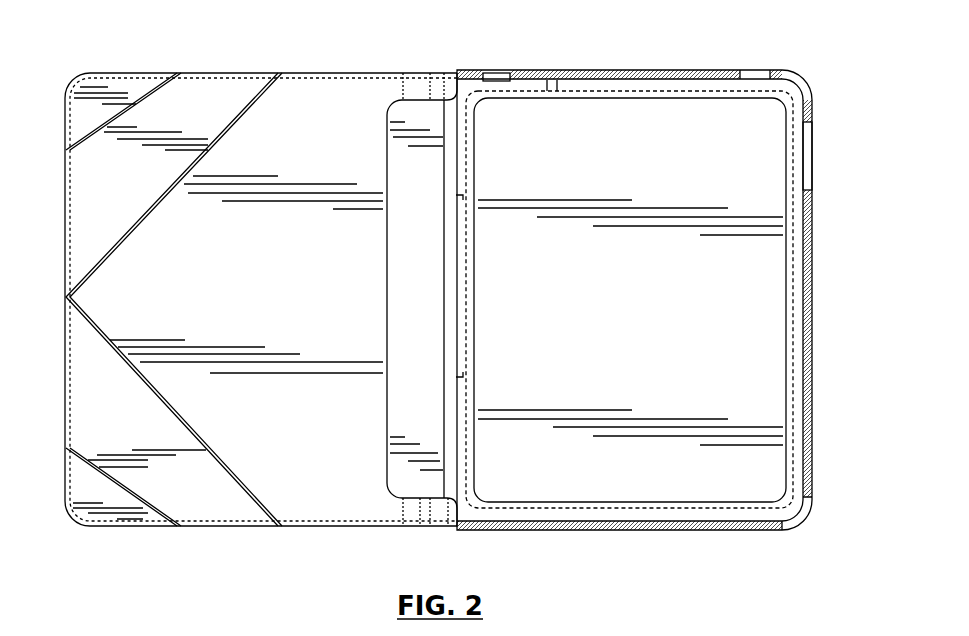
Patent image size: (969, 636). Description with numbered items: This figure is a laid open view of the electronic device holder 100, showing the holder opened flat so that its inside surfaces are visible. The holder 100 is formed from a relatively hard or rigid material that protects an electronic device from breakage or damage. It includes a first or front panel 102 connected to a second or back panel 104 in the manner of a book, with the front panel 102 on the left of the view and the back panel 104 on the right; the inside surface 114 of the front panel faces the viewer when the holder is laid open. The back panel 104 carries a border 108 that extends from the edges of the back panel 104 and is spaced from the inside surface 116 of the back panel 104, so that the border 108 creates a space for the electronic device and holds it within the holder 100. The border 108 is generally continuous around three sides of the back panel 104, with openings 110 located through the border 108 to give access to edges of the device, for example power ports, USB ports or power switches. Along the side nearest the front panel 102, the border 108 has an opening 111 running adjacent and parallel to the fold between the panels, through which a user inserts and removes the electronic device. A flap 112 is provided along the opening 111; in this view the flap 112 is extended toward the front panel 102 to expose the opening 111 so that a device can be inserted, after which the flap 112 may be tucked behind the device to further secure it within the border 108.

The electronic device holder 100 is at (596, 56).
The front panel 102 is at (247, 450).
The back panel 104 is at (661, 465).
The border 108 is at (813, 367).
The openings 110 is at (811, 157).
The opening 111 is at (421, 87).
The flap 112 is at (403, 467).
The inner surface of cover 114 is at (220, 298).
The inside surface of back panel 116 is at (645, 298).